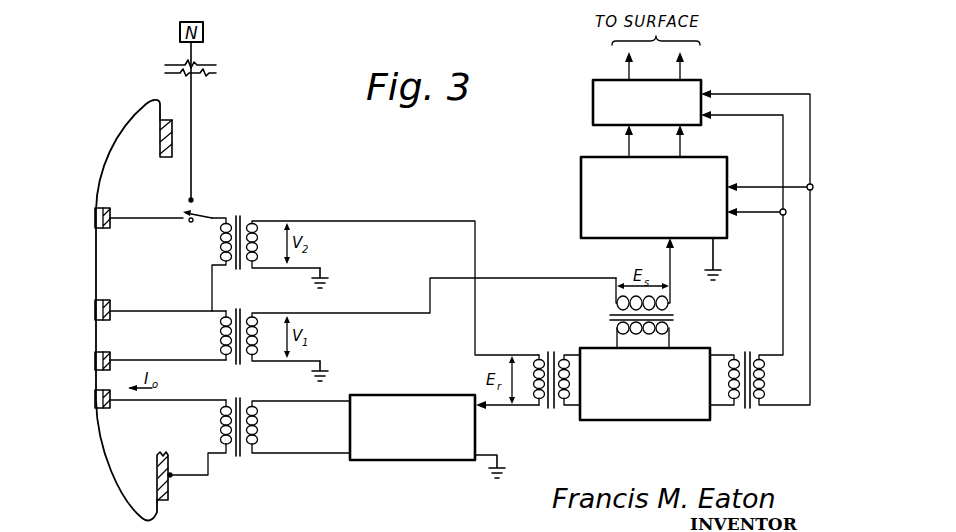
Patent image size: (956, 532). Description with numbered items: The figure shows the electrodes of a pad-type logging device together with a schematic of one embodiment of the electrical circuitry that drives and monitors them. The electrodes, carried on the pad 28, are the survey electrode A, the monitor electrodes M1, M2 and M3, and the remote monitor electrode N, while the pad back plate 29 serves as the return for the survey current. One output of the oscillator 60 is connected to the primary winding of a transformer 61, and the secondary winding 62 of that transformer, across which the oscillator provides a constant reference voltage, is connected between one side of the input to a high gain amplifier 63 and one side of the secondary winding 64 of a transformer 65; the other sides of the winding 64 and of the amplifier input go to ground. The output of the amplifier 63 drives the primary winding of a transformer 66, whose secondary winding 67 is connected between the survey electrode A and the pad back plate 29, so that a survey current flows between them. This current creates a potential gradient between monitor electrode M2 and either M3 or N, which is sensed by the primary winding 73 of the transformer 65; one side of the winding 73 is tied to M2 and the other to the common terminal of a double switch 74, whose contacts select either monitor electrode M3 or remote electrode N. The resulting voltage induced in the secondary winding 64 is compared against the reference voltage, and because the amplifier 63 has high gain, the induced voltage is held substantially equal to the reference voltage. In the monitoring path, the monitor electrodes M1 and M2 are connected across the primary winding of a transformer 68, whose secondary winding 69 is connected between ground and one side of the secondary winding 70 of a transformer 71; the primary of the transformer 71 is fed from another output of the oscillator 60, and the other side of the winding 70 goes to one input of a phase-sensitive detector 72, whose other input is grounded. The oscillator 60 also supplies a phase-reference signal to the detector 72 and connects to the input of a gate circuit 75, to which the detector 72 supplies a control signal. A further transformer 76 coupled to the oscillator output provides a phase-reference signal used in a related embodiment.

The probe housing 28 is at (108, 143).
The pad back plate 29 is at (171, 492).
The monitor electrode M3 is at (95, 218).
The monitor electrode M2 is at (95, 311).
The monitor electrode M1 is at (95, 360).
The survey electrode A is at (95, 400).
The double switch 74 is at (203, 213).
The primary winding 73 is at (220, 238).
The transformer 65 is at (237, 273).
The secondary winding 64 is at (256, 232).
The transformer 68 is at (237, 366).
The secondary winding 69 is at (258, 336).
The secondary winding 67 is at (220, 430).
The transformer 66 is at (238, 460).
The high gain amplifier 63 is at (415, 461).
The secondary winding 62 is at (534, 386).
The transformer 61 is at (551, 349).
The oscillator 60 is at (650, 421).
The secondary winding 70 is at (672, 297).
The transformer 71 is at (609, 316).
The transformer 76 is at (746, 350).
The gate circuit 75 is at (593, 105).
The phase-sensitive detector 72 is at (581, 170).